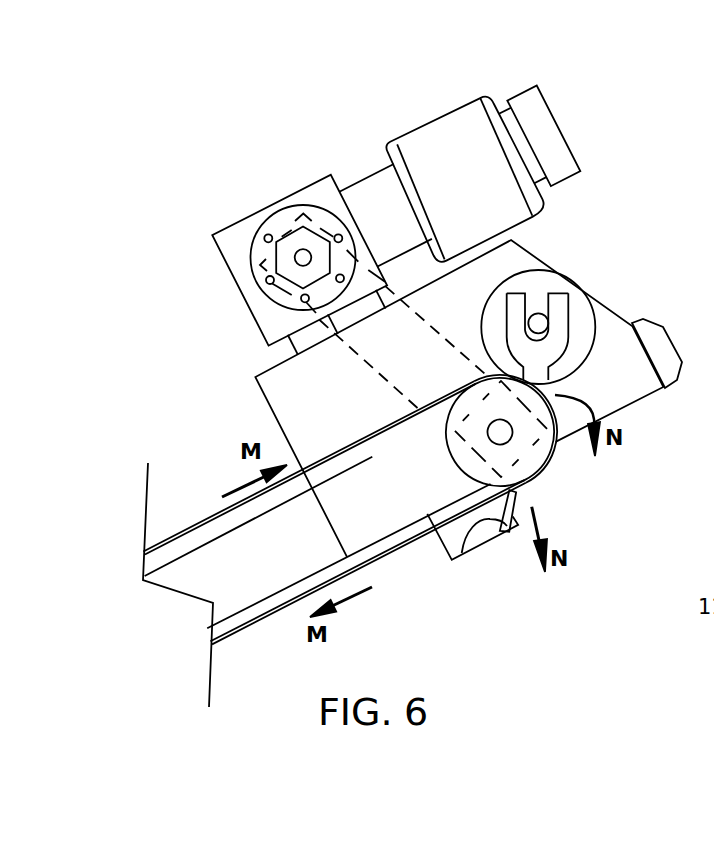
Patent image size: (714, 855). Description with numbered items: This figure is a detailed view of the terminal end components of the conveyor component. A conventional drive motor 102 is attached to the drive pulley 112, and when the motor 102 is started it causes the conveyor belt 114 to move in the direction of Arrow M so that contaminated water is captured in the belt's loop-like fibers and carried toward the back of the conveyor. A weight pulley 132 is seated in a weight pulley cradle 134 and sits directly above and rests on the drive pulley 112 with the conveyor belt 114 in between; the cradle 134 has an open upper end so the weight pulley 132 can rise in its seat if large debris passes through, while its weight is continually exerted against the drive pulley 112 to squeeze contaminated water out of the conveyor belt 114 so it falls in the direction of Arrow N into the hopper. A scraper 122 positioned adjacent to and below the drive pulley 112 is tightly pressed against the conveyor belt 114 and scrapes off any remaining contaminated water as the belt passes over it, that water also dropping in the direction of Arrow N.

The drive motor 102 is at (443, 157).
The drive pulley 112 is at (535, 457).
The conveyor belt 114 is at (203, 523).
The scraper 122 is at (462, 553).
The weight pulley 132 is at (537, 292).
The weight pulley cradle 134 is at (558, 328).